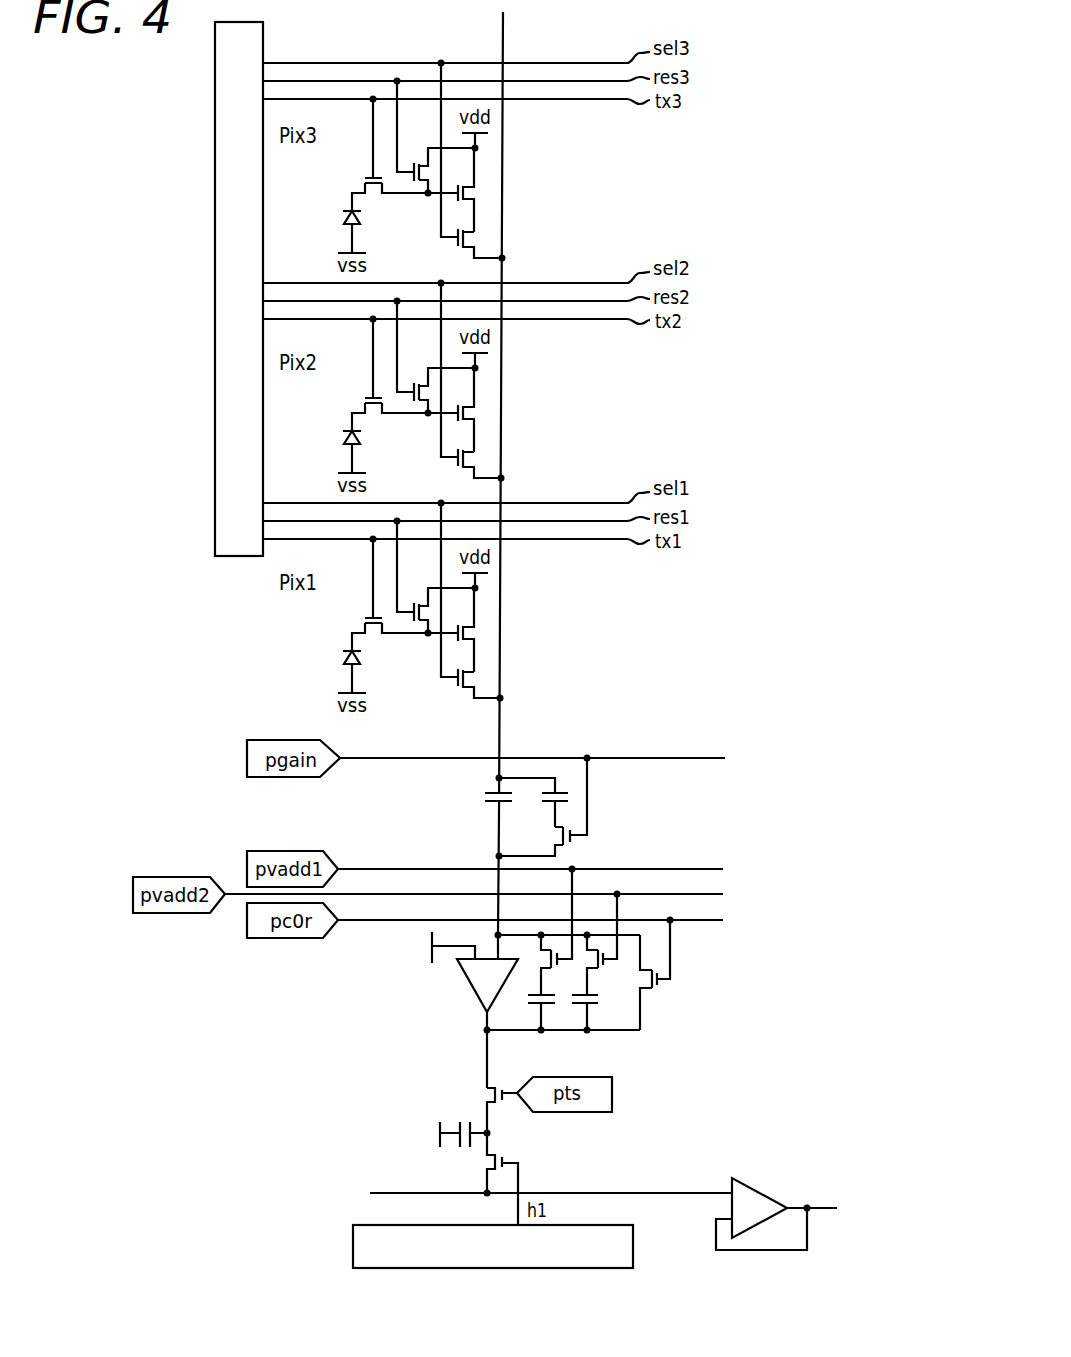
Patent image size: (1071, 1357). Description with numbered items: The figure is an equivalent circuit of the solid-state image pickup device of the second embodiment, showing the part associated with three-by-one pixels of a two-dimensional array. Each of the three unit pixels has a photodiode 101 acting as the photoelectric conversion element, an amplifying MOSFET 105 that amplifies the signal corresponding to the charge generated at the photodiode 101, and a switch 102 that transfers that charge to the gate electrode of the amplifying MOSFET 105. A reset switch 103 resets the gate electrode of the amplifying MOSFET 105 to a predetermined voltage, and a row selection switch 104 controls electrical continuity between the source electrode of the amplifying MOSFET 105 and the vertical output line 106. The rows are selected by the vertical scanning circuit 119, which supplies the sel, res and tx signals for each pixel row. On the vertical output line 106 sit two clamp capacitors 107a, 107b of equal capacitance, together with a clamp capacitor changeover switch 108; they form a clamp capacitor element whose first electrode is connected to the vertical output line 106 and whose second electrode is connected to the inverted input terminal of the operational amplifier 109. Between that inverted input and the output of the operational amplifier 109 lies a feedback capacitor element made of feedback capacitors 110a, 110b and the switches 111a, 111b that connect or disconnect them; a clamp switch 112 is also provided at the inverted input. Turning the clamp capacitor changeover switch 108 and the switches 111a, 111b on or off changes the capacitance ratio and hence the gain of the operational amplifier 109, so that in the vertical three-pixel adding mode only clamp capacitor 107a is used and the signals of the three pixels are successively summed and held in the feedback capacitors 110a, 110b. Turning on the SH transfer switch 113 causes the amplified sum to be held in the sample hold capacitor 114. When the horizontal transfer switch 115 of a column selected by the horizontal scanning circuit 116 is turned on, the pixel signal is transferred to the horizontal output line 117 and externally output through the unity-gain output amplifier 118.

The photodiode 101 is at (343, 215).
The switch 102 is at (375, 199).
The reset switch 103 is at (428, 172).
The row selection switch 104 is at (475, 238).
The amplifying MOSFET 105 is at (475, 193).
The vertical output line 106 is at (503, 410).
The clamp capacitor 107a is at (496, 779).
The clamp capacitor 107b is at (562, 790).
The clamp capacitor changeover switch 108 is at (560, 835).
The operational amplifier 109 is at (468, 990).
The feedback capacitor 110a is at (537, 1007).
The feedback capacitor 110b is at (600, 1007).
The switch 111a is at (548, 967).
The switch 111b is at (603, 965).
The clamp switch 112 is at (660, 985).
The SH transfer switch 113 is at (487, 1096).
The sample hold capacitor 114 is at (473, 1140).
The horizontal transfer switch 115 is at (487, 1164).
The horizontal scanning circuit 116 is at (493, 1246).
The horizontal output line 117 is at (620, 1193).
The unity-gain output amplifier 118 is at (762, 1190).
The vertical scanning circuit 119 is at (239, 289).